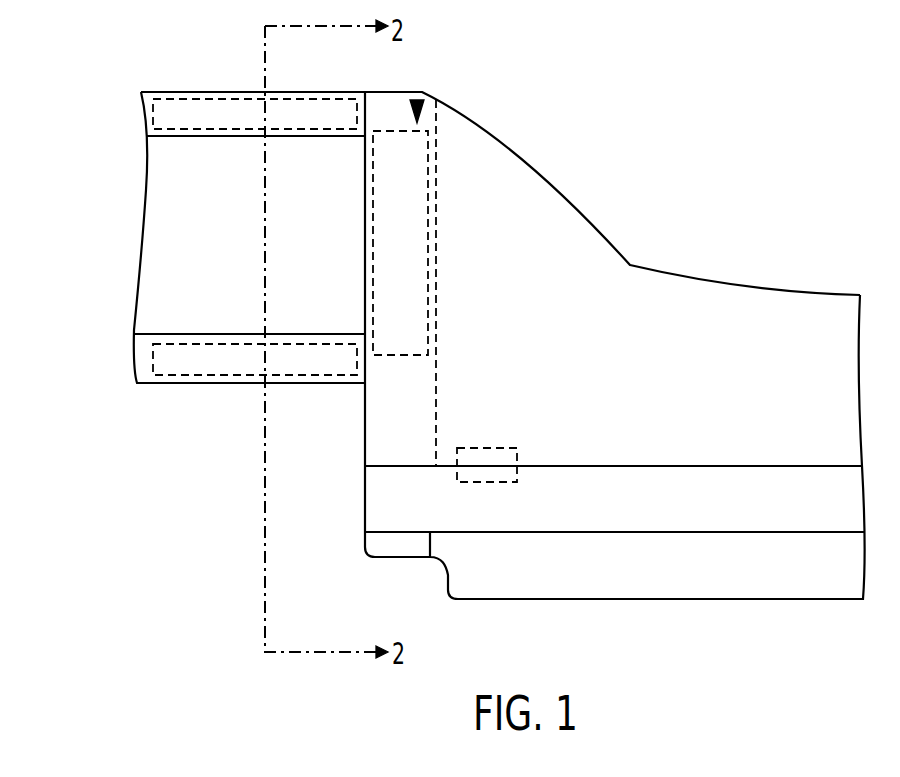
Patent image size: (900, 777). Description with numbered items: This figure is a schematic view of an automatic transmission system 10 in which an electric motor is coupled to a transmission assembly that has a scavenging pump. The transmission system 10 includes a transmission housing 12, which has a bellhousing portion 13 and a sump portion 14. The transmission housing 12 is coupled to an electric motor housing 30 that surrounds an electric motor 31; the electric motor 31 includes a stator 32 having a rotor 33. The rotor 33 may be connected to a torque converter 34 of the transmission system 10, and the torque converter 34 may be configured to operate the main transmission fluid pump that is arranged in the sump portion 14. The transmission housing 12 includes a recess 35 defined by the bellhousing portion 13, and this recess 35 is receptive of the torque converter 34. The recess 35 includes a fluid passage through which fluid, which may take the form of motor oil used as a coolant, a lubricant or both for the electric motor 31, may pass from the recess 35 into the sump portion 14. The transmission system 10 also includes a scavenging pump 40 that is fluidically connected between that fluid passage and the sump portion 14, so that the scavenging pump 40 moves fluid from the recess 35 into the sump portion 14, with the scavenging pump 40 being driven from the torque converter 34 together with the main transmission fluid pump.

The automatic transmission system 10 is at (584, 345).
The transmission housing 12 is at (517, 165).
The bellhousing portion 13 is at (426, 92).
The sump portion 14 is at (613, 573).
The electric motor housing 30 is at (202, 240).
The electric motor 31 is at (118, 122).
The stator 32 is at (193, 362).
The rotor 33 is at (280, 240).
The torque converter 34 is at (418, 270).
The recess 35 is at (385, 418).
The scavenging pump 40 is at (480, 485).